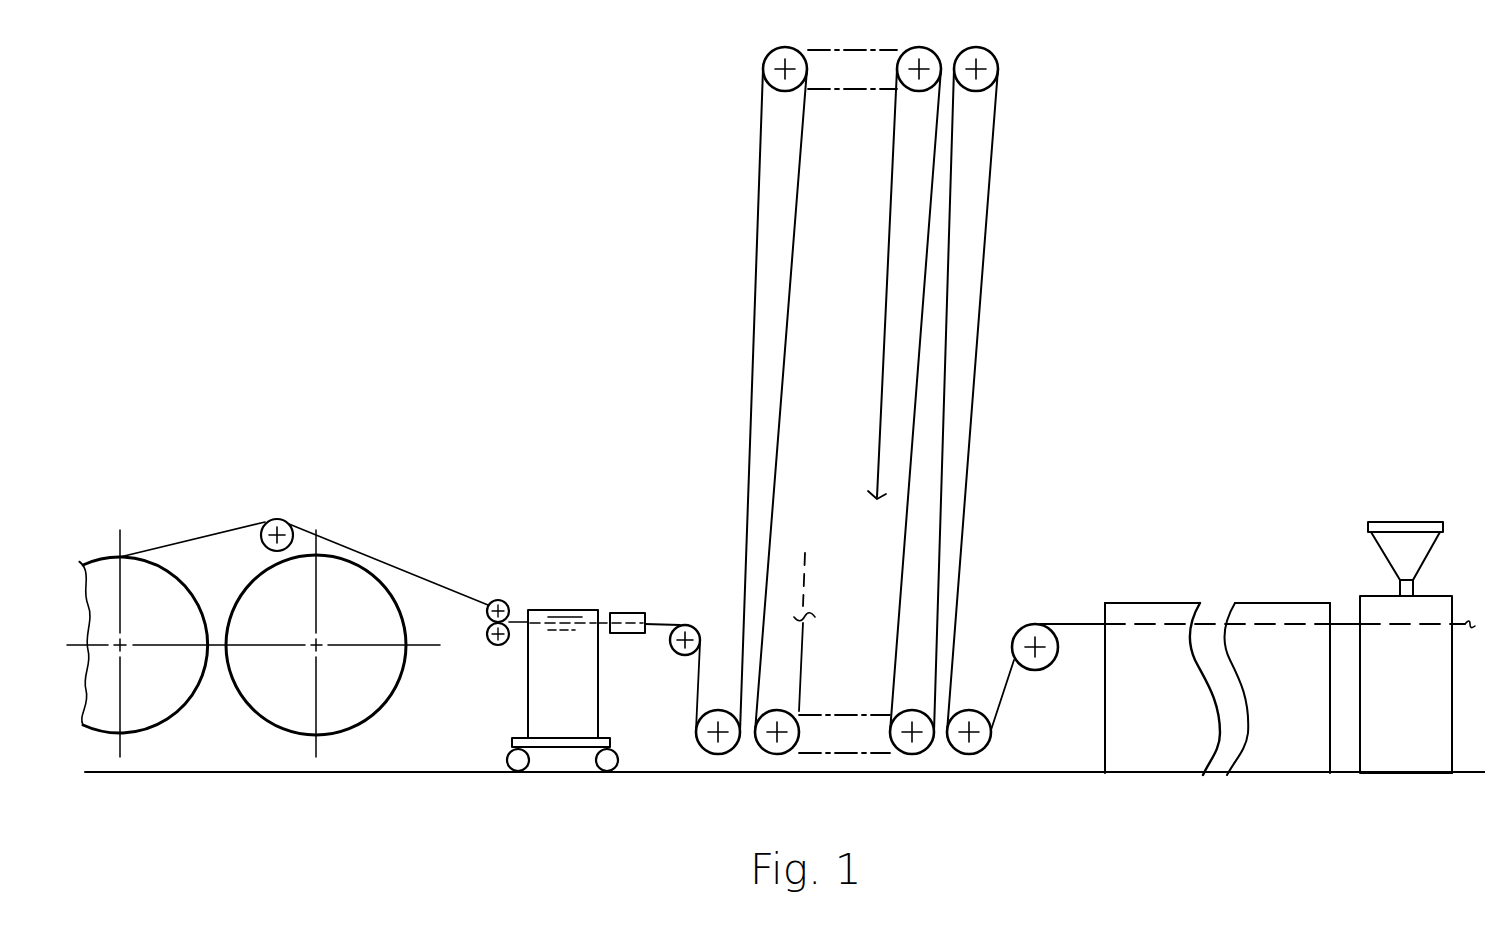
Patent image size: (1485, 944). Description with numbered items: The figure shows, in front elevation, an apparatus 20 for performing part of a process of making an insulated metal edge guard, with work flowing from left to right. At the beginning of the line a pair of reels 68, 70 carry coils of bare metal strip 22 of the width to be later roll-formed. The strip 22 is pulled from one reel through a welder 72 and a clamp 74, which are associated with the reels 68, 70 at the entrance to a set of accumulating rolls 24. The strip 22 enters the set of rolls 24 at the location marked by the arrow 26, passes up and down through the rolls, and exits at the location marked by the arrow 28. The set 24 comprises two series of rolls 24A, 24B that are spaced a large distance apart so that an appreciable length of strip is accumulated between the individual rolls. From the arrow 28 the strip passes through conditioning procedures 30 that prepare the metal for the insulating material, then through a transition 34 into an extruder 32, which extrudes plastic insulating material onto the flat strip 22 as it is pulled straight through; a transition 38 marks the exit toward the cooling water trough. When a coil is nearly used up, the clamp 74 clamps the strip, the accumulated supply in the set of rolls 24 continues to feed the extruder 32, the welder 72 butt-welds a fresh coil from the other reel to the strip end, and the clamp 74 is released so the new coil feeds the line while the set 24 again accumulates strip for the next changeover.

The apparatus 20 is at (1180, 283).
The metal strip 22 is at (659, 630).
The set of accumulating rolls 24 is at (1020, 279).
The series of rolls 24A is at (1012, 744).
The series of rolls 24B is at (1020, 67).
The arrow 26 is at (668, 626).
The arrow 28 is at (1070, 624).
The conditioning procedures 30 is at (1167, 603).
The extruder 32 is at (1393, 520).
The transition 34 is at (1345, 622).
The transition 38 is at (1462, 622).
The reel 68 is at (383, 706).
The reel 70 is at (178, 706).
The welder 72 is at (548, 610).
The clamp 74 is at (625, 611).